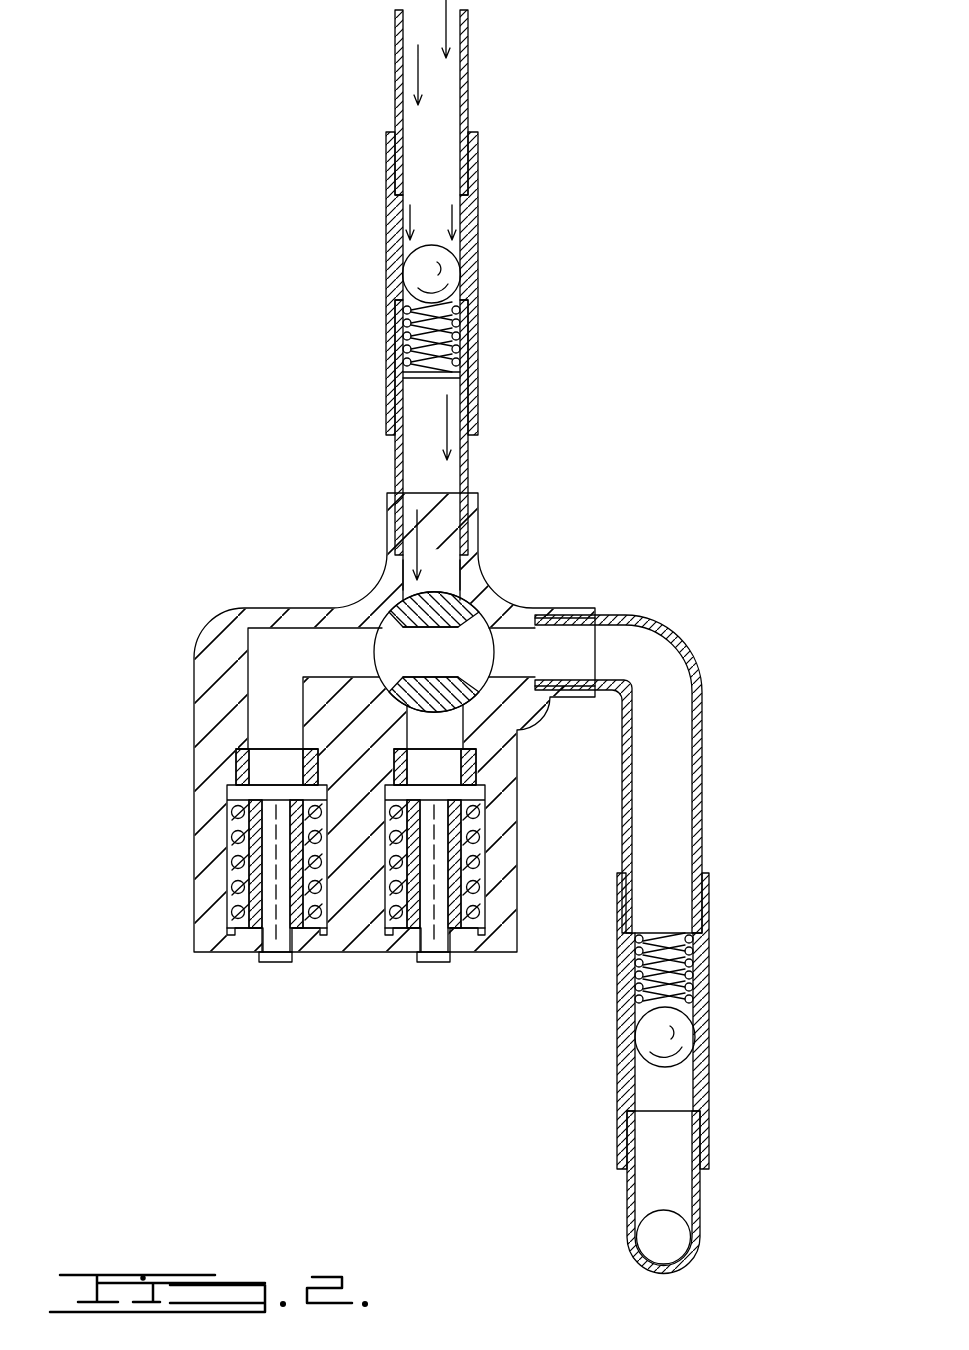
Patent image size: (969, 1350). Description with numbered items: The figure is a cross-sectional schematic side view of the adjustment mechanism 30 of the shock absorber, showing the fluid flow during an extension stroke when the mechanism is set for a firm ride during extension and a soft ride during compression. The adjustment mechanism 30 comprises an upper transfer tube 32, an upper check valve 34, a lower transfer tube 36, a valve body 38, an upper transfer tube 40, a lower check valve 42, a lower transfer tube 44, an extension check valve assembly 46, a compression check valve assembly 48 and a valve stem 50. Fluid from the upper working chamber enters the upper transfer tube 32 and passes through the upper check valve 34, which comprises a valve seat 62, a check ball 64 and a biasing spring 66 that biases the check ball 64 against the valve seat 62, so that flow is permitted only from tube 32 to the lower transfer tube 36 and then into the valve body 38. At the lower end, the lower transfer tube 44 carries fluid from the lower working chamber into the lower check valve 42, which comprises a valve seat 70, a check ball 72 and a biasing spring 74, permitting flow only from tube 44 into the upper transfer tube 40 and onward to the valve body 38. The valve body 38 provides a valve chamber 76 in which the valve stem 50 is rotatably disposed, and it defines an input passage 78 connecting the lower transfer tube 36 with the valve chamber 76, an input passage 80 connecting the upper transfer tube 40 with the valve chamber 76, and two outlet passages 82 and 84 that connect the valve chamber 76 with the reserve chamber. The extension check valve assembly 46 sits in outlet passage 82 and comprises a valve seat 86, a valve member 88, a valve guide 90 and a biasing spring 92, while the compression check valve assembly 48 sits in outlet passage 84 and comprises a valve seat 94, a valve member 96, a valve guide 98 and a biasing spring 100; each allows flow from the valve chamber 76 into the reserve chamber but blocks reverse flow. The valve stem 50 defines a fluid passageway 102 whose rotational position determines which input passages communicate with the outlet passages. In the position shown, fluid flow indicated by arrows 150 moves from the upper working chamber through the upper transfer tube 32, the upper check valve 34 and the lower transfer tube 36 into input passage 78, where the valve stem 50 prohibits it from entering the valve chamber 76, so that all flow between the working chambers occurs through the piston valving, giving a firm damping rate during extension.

The adjustment mechanism 30 is at (707, 212).
The upper transfer tube 32 is at (468, 97).
The upper check valve 34 is at (515, 256).
The lower transfer tube 36 is at (470, 447).
The valve body 38 is at (203, 656).
The upper transfer tube 40 is at (703, 716).
The lower check valve 42 is at (748, 1049).
The lower transfer tube 44 is at (701, 1159).
The extension check valve assembly 46 is at (453, 972).
The compression check valve assembly 48 is at (283, 978).
The valve stem 50 is at (443, 608).
The valve seat 62 is at (414, 268).
The check ball 64 is at (420, 290).
The biasing spring 66 is at (403, 367).
The valve seat 70 is at (643, 1039).
The check ball 72 is at (672, 1034).
The biasing spring 74 is at (694, 952).
The valve chamber 76 is at (378, 645).
The input passage 78 is at (442, 567).
The input passage 80 is at (523, 655).
The outlet passage 82 is at (450, 746).
The outlet passage 84 is at (300, 669).
The valve seat 86 is at (480, 763).
The valve member 88 is at (478, 825).
The valve guide 90 is at (478, 915).
The biasing spring 92 is at (478, 873).
The valve seat 94 is at (240, 760).
The valve member 96 is at (242, 820).
The valve guide 98 is at (240, 934).
The biasing spring 100 is at (228, 860).
The fluid passageway 102 is at (452, 667).
The arrows 150 is at (448, 33).